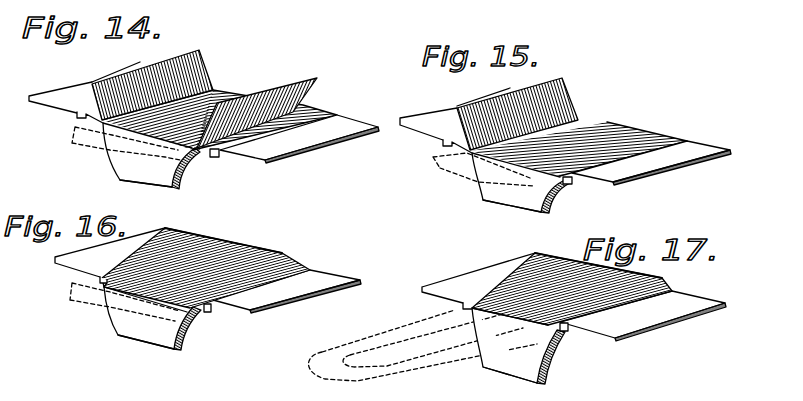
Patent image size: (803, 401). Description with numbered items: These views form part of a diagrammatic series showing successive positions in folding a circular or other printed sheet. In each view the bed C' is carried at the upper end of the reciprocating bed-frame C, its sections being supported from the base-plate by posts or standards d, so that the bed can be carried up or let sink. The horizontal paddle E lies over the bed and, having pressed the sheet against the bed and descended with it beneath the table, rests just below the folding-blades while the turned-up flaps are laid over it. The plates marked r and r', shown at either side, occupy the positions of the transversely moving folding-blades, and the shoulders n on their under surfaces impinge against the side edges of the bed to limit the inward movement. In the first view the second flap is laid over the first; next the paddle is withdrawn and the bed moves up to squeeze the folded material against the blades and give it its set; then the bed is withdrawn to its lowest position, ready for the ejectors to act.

In FIG. 14, the side plate r is at (65, 86).
In FIG. 15, the side plate r is at (435, 119).
In FIG. 16, the side plate r is at (110, 252).
In FIG. 17, the side plate r is at (478, 277).
In FIG. 14, the side plate r' is at (299, 131).
In FIG. 15, the side plate r' is at (651, 154).
In FIG. 16, the side plate r' is at (287, 282).
In FIG. 17, the side plate r' is at (643, 309).
In FIG. 14, the shoulders n is at (77, 115).
In FIG. 15, the shoulders n is at (443, 143).
In FIG. 16, the shoulders n is at (100, 280).
In FIG. 17, the shoulders n is at (463, 306).
In FIG. 14, the bed-frame C is at (147, 155).
In FIG. 15, the bed-frame C is at (516, 182).
In FIG. 16, the bed-frame C is at (145, 318).
In FIG. 17, the bed-frame C is at (516, 348).
In FIG. 14, the bed C' is at (191, 169).
In FIG. 15, the bed C' is at (506, 190).
In FIG. 16, the bed C' is at (193, 328).
In FIG. 17, the bed C' is at (538, 353).
In FIG. 14, the posts or standards d is at (168, 178).
In FIG. 15, the posts or standards d is at (490, 188).
In FIG. 16, the posts or standards d is at (140, 334).
In FIG. 17, the posts or standards d is at (505, 358).
In FIG. 14, the paddle E is at (124, 143).
In FIG. 15, the paddle E is at (470, 169).
In FIG. 16, the paddle E is at (119, 302).
In FIG. 17, the paddle E is at (423, 345).